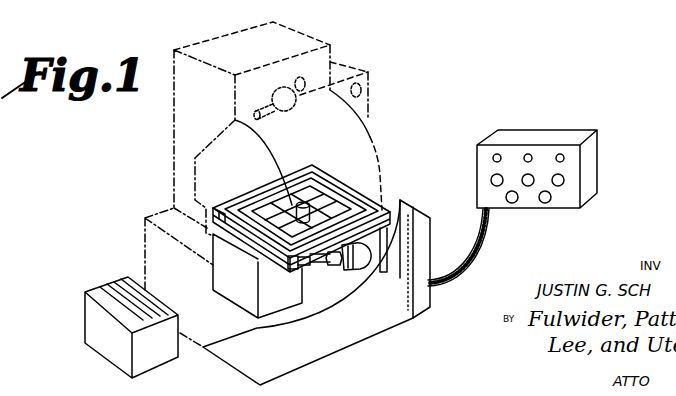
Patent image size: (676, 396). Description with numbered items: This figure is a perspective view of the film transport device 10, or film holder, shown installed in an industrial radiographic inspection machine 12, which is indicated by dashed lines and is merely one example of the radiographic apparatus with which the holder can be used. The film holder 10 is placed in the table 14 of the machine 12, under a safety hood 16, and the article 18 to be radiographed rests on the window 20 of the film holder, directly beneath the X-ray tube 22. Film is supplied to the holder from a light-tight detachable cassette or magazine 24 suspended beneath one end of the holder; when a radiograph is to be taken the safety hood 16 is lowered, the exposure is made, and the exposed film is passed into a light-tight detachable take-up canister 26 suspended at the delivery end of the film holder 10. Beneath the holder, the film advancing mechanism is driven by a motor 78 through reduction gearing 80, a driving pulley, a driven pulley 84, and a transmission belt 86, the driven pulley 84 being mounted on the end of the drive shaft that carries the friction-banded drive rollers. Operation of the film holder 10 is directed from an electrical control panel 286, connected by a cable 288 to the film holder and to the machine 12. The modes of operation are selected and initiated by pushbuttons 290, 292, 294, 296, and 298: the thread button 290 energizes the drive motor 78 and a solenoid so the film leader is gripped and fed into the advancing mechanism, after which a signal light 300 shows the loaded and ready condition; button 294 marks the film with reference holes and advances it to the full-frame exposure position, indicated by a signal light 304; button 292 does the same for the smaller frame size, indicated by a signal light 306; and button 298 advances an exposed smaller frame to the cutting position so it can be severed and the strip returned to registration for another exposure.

The film transport device 10 is at (387, 211).
The industrial radiographic inspection machine 12 is at (173, 126).
The table 14 is at (145, 246).
The safety hood 16 is at (370, 121).
The article 18 is at (310, 203).
The window 20 is at (378, 165).
The X-ray tube 22 is at (286, 118).
The magazine 24 is at (283, 325).
The take-up canister 26 is at (381, 262).
The motor 78 is at (350, 268).
The reduction gearing 80 is at (325, 265).
The driven pulley 84 is at (288, 264).
The transmission belt 86 is at (306, 267).
The control panel 286 is at (571, 197).
The cable 288 is at (508, 202).
The thread button 290 is at (491, 181).
The pushbutton 292 is at (528, 186).
The pushbutton 294 is at (564, 178).
The pushbutton 296 is at (478, 240).
The pushbutton 298 is at (551, 200).
The signal light 300 is at (497, 154).
The signal light 304 is at (562, 155).
The signal light 306 is at (529, 154).